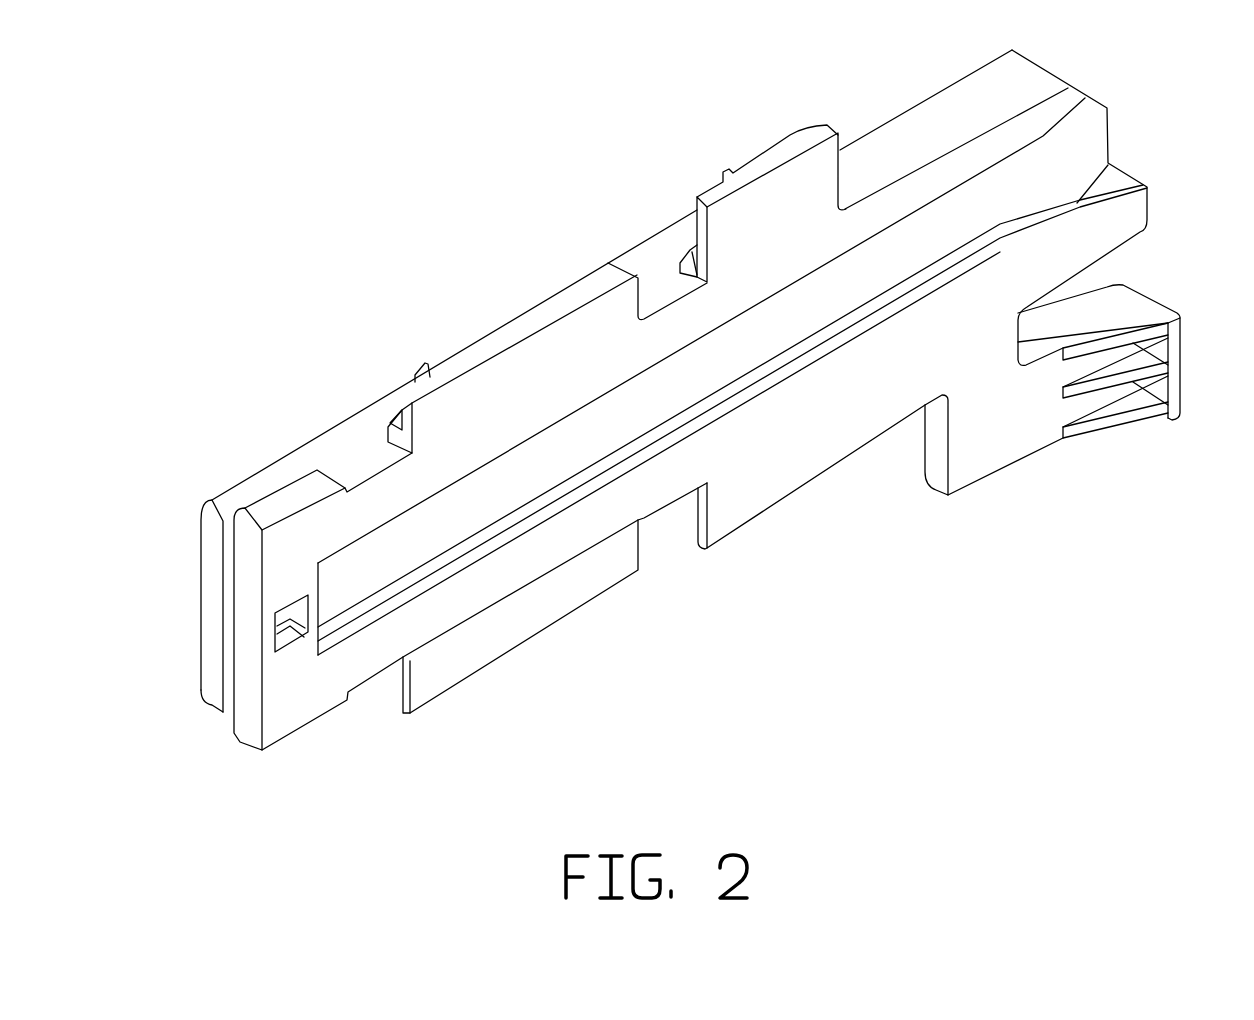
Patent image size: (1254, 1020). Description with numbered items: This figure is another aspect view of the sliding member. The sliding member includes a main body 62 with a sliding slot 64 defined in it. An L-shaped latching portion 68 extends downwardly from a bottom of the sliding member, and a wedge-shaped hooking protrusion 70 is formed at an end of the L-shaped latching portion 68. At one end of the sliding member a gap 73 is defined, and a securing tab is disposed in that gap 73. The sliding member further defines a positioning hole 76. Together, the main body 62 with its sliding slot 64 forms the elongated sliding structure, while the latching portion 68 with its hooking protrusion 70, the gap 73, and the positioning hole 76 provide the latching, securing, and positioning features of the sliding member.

The main body 62 is at (592, 558).
The sliding slot 64 is at (681, 383).
The L-shaped latching portion 68 is at (988, 457).
The wedge-shaped hooking protrusion 70 is at (1137, 378).
The gap 73 is at (230, 598).
The positioning hole 76 is at (289, 640).